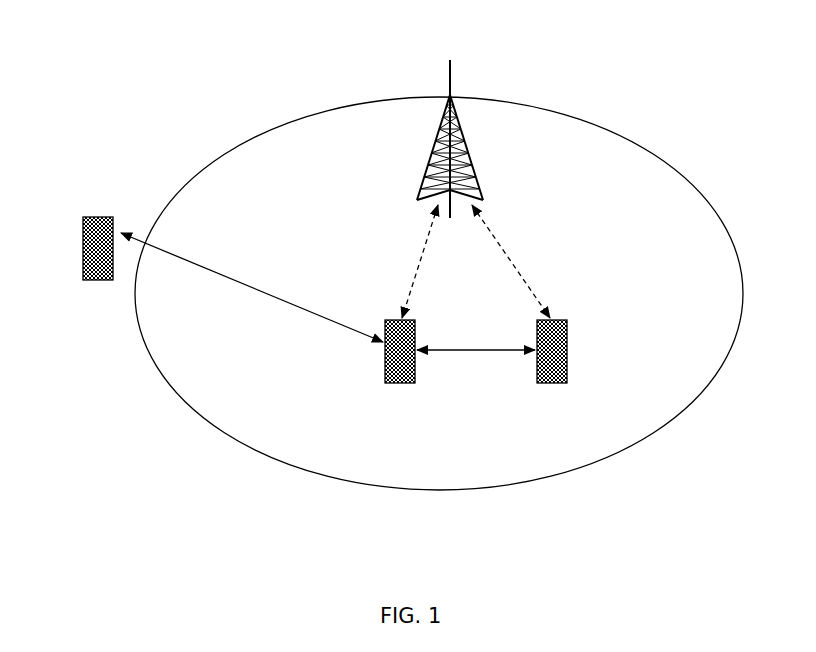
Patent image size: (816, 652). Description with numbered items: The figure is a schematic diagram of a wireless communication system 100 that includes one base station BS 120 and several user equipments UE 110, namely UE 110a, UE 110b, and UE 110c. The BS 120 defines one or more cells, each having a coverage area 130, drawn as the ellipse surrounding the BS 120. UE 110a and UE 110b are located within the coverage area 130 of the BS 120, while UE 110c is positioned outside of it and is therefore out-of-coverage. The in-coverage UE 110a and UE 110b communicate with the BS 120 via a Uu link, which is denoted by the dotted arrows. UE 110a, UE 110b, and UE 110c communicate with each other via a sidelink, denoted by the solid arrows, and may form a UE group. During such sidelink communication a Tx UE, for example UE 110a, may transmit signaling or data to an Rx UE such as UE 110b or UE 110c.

The wireless communication system 100 is at (620, 117).
The UE 110 is at (584, 343).
The UE 110a is at (401, 386).
The UE 110b is at (553, 386).
The UE 110c is at (105, 283).
The BS 120 is at (426, 171).
The coverage area 130 is at (216, 157).